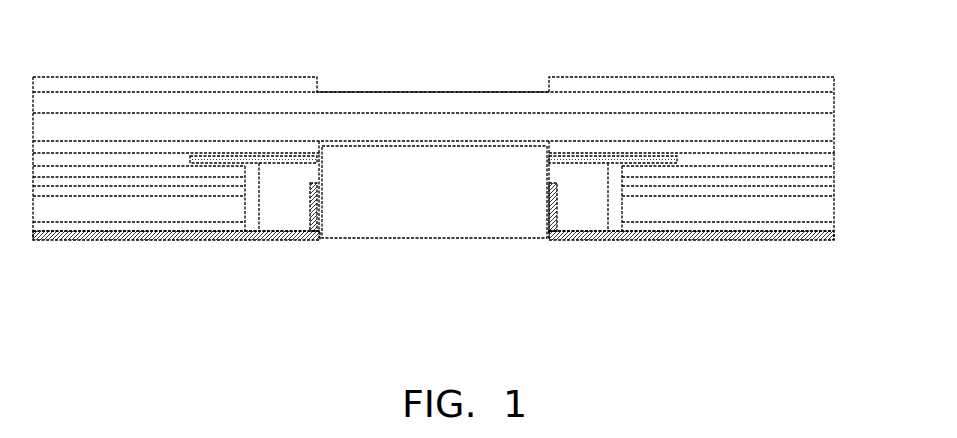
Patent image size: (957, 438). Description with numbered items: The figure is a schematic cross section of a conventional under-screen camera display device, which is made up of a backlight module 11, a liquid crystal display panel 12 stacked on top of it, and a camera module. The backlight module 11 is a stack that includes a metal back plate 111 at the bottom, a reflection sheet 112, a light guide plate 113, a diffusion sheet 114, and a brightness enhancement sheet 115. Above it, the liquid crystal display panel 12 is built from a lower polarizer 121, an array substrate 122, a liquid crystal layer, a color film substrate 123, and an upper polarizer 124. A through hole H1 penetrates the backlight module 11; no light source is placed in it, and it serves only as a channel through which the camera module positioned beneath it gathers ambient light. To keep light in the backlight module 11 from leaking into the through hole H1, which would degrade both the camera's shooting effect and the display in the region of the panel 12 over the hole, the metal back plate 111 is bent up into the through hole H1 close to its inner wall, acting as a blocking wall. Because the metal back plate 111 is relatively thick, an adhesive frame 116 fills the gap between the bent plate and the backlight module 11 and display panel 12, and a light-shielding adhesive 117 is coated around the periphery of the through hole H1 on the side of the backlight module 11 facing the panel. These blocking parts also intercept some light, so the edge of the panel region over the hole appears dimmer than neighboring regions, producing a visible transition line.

The liquid crystal display panel 12 is at (461, 91).
The backlight module 11 is at (461, 227).
The metal back plate 111 is at (836, 236).
The reflection sheet 112 is at (773, 223).
The light guide plate 113 is at (717, 213).
The diffusion sheet 114 is at (838, 189).
The brightness enhancement sheet 115 is at (836, 185).
The adhesive frame 116 is at (577, 217).
The light-shielding adhesive 117 is at (605, 162).
The lower polarizer 121 is at (656, 152).
The array substrate 122 is at (828, 128).
The color film substrate 123 is at (592, 104).
The upper polarizer 124 is at (838, 84).
The through hole H1 is at (403, 248).